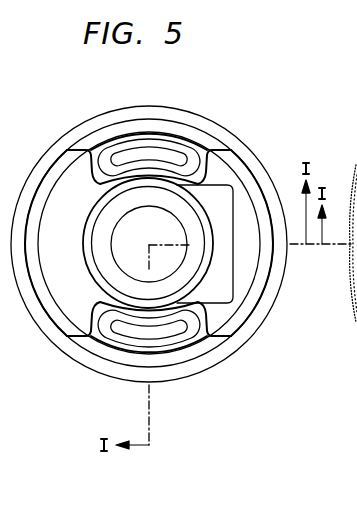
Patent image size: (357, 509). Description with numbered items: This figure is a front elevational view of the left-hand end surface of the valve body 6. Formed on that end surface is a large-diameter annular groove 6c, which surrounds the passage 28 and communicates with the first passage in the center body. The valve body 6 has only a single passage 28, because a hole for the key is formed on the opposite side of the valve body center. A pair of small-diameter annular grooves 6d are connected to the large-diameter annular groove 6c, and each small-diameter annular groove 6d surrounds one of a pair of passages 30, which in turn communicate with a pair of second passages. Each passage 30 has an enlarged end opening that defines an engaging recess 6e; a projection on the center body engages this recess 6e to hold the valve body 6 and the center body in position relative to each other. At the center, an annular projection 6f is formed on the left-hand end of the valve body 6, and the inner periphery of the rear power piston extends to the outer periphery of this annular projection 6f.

The valve body 6 is at (232, 370).
The large-diameter annular groove 6c is at (206, 140).
The small-diameter annular grooves 6d is at (91, 149).
The engaging recess 6e is at (116, 142).
The annular projection 6f is at (90, 244).
The passage 28 is at (244, 252).
The passages 30 is at (154, 147).